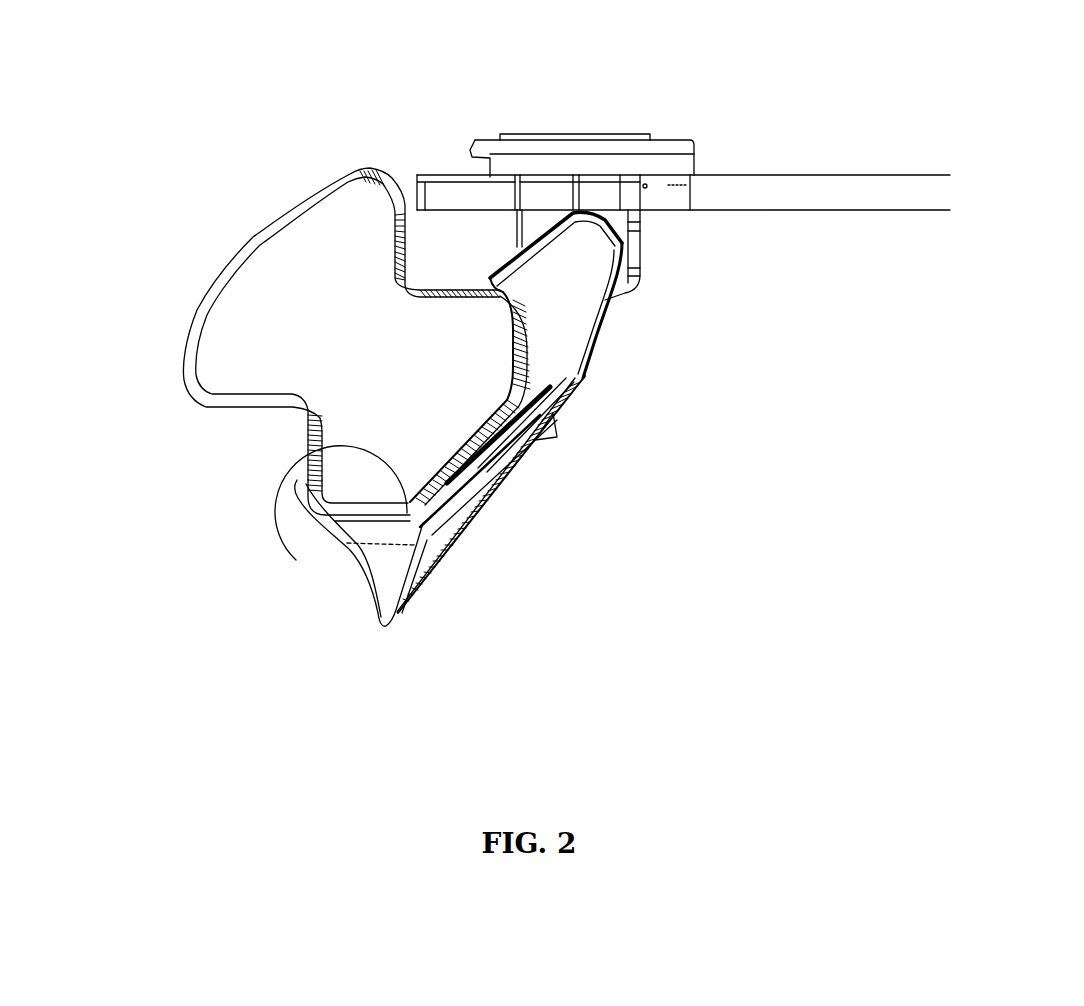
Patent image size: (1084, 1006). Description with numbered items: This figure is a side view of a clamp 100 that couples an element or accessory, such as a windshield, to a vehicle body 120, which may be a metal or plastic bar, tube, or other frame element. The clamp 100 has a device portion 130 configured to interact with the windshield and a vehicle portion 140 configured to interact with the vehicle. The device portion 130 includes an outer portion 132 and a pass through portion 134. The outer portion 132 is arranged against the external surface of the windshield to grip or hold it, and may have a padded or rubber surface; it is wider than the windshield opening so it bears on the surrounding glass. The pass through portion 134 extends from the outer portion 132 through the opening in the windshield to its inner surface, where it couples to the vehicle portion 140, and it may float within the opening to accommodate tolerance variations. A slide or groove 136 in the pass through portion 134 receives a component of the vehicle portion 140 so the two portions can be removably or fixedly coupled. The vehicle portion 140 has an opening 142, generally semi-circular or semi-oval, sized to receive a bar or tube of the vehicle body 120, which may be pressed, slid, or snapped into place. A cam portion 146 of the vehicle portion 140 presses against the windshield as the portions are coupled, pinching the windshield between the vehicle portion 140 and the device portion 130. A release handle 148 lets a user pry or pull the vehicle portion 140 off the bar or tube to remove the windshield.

The clamp 100 is at (233, 150).
The vehicle body 120 is at (200, 338).
The device portion 130 is at (519, 163).
The outer portion 132 is at (683, 144).
The pass through portion 134 is at (629, 197).
The groove 136 is at (621, 248).
The vehicle portion 140 is at (467, 513).
The opening 142 is at (341, 512).
The cam portion 146 is at (566, 243).
The release handle 148 is at (387, 558).